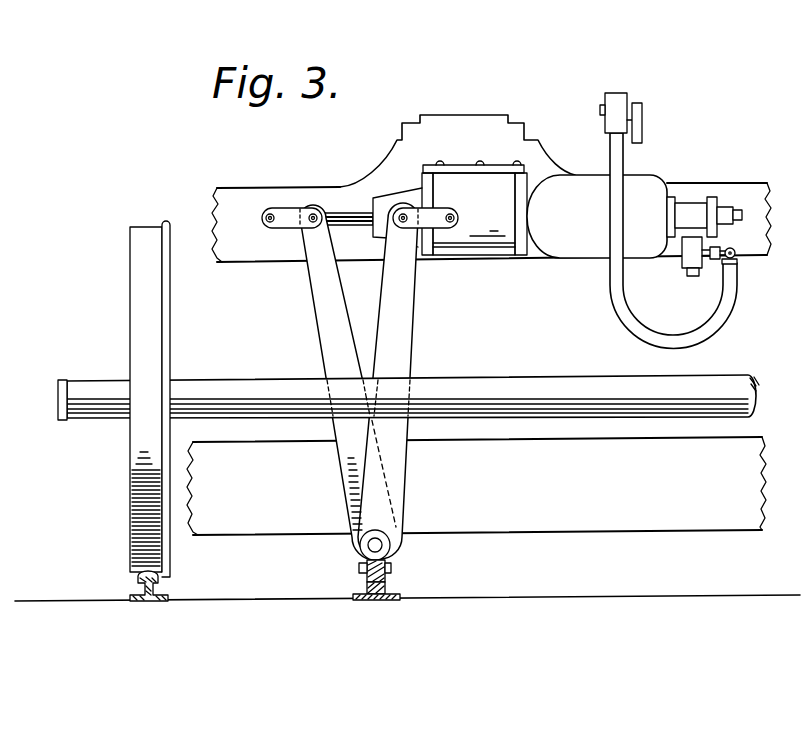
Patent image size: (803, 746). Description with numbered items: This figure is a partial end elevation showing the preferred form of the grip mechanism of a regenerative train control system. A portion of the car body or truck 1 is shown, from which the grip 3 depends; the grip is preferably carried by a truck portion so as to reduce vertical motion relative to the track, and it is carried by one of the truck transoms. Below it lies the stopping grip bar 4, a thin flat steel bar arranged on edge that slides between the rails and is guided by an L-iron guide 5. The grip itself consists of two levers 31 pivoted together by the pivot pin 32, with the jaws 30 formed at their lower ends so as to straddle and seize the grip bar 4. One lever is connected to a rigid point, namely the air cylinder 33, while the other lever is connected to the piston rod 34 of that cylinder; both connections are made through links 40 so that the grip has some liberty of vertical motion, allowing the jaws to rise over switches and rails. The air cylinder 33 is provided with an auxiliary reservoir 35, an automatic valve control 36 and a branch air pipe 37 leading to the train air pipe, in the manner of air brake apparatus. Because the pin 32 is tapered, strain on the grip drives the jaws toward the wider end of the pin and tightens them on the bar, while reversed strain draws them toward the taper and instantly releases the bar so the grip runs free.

The car body or truck 1 is at (479, 359).
The grip 3 is at (408, 406).
The stopping grip bar 4 is at (387, 583).
The L-iron guide 5 is at (366, 593).
The jaw 30 is at (359, 562).
The lever 31 is at (325, 302).
The pivot pin 32 is at (380, 543).
The air cylinder 33 is at (474, 208).
The piston rod 34 is at (341, 213).
The auxiliary reservoir 35 is at (597, 216).
The automatic valve control 36 is at (687, 200).
The branch air pipe 37 is at (622, 158).
The link 40 is at (284, 216).